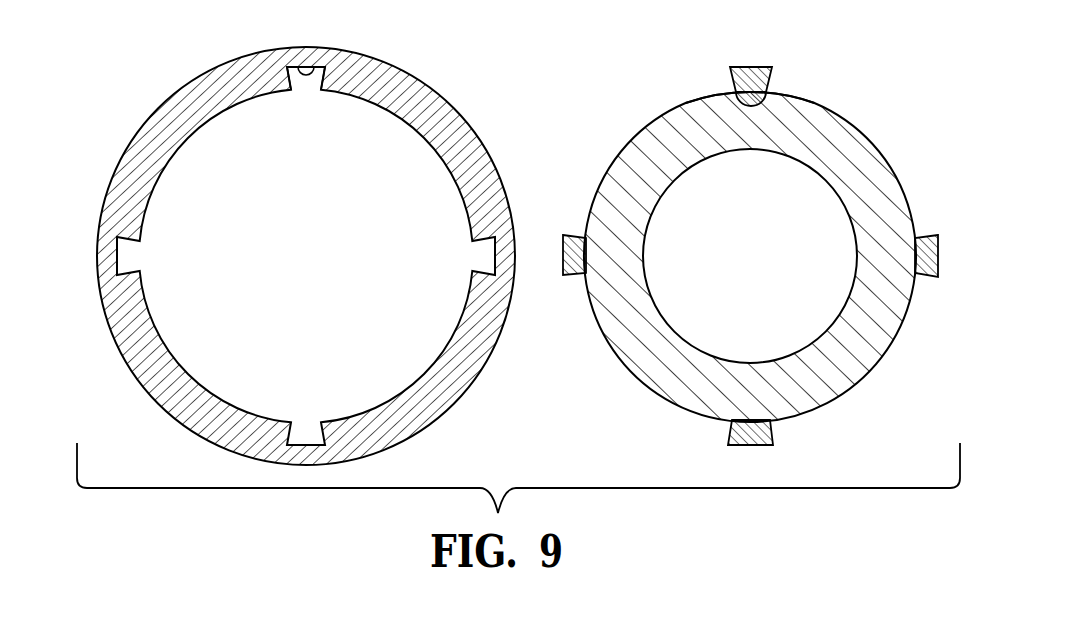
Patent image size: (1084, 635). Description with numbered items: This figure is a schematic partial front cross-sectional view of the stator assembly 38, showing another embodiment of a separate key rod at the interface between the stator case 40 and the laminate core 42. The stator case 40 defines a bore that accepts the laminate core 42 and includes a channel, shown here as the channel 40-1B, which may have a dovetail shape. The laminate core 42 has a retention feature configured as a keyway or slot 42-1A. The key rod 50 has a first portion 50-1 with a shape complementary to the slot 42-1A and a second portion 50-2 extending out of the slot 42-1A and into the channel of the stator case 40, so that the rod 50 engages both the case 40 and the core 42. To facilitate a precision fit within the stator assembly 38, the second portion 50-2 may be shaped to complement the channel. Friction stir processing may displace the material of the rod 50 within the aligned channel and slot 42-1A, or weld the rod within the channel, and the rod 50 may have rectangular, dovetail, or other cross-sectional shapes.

The stator assembly 38 is at (300, 241).
The stator case 40 is at (306, 241).
The channel 40-1B is at (321, 68).
The laminate core 42 is at (752, 245).
The slot 42-1A is at (770, 103).
The key rod 50 is at (729, 79).
The first portion 50-1 is at (728, 109).
The second portion 50-2 is at (731, 77).